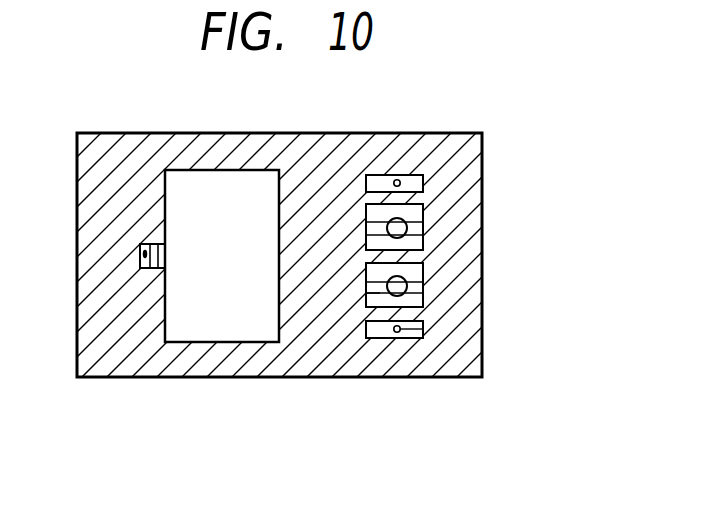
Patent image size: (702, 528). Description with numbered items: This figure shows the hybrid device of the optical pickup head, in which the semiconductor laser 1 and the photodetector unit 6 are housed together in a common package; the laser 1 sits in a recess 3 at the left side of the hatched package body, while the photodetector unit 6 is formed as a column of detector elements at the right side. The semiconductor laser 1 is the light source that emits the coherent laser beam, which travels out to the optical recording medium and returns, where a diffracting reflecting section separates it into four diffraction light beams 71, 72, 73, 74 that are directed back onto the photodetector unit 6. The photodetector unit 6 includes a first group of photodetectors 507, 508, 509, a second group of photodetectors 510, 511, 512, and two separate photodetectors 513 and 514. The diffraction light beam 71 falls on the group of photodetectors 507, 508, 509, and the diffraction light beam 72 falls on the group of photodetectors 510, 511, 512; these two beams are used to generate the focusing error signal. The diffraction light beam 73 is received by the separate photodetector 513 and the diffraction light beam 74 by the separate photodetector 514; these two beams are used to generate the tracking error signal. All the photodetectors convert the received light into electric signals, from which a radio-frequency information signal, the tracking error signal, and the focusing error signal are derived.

The photodetector unit 6 is at (101, 133).
The semiconductor laser 1 is at (157, 243).
The cavity 3 is at (252, 178).
The photodetector 508 is at (363, 217).
The photodetector 513 is at (380, 177).
The diffraction light beam 73 is at (400, 183).
The photodetector 507 is at (423, 205).
The diffraction light beam 71 is at (423, 230).
The photodetector 509 is at (423, 266).
The photodetector 510 is at (423, 285).
The diffraction light beam 72 is at (423, 296).
The photodetector 512 is at (423, 329).
The diffraction light beam 74 is at (425, 339).
The photodetector 511 is at (366, 290).
The photodetector 514 is at (413, 338).